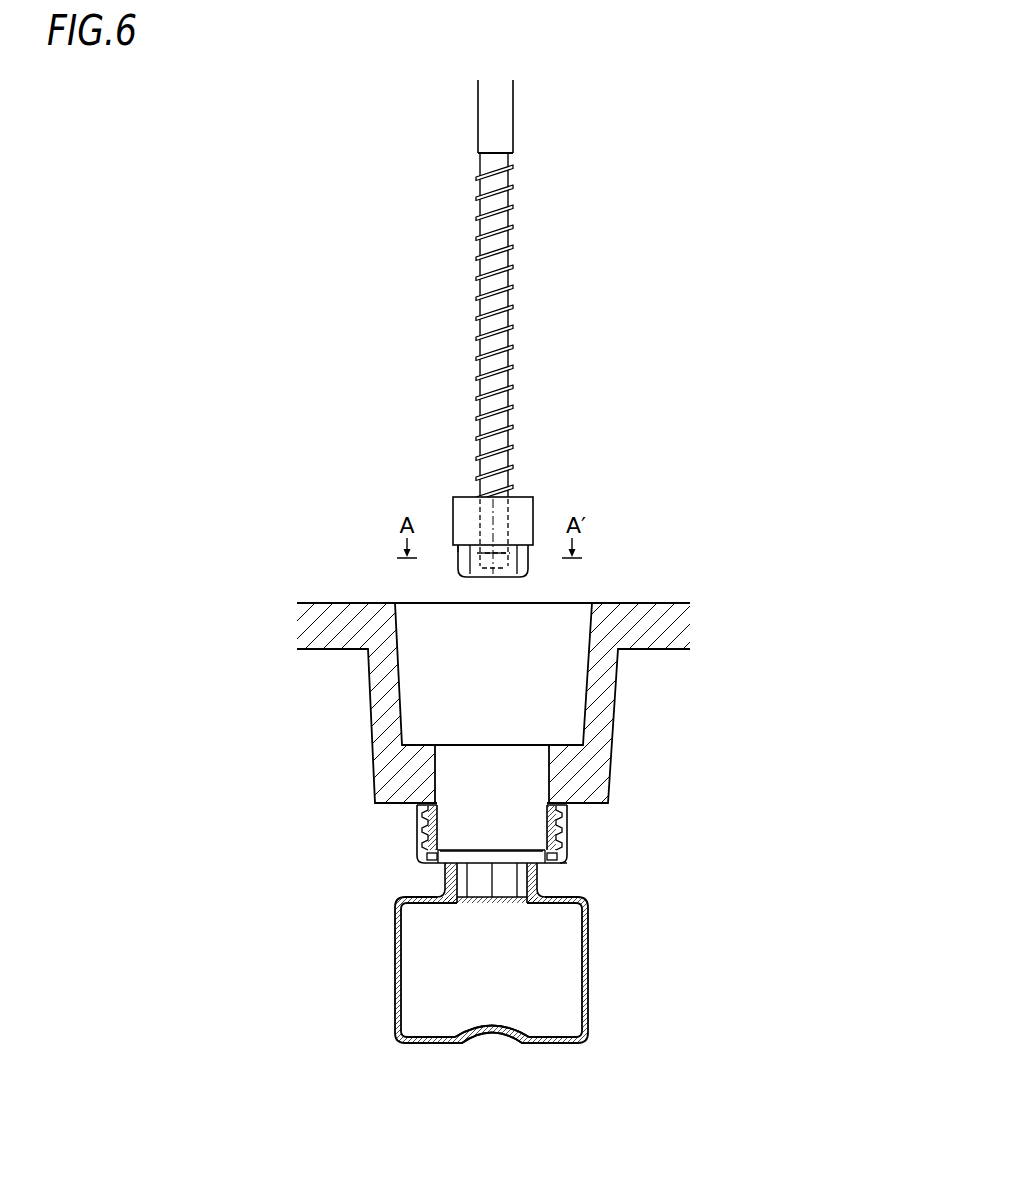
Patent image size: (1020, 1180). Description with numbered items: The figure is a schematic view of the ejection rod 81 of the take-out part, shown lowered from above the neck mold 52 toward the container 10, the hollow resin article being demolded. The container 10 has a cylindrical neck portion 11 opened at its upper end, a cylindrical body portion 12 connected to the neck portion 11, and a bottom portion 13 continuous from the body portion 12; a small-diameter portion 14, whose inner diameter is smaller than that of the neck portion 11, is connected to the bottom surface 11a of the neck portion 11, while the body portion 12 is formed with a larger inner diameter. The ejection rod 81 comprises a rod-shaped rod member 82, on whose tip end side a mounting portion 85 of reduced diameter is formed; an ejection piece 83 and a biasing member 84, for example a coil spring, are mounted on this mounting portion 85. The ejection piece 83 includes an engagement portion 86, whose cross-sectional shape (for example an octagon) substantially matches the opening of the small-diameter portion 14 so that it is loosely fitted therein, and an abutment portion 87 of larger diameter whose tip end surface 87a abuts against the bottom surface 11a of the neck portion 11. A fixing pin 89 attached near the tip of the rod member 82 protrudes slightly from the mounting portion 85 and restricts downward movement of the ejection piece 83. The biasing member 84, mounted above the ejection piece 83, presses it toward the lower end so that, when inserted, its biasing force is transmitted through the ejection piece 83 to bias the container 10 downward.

The container 10 is at (636, 861).
The neck portion 11 is at (439, 825).
The bottom surface of the neck portion 11a is at (453, 862).
The body portion 12 is at (395, 975).
The bottom portion 13 is at (432, 1045).
The small-diameter portion 14 is at (447, 882).
The neck mold 52 is at (597, 767).
The ejection rod 81 is at (596, 150).
The rod member 82 is at (489, 126).
The ejection piece 83 is at (603, 430).
The biasing member 84 is at (507, 265).
The mounting portion 85 is at (492, 222).
The engagement portion 86 is at (528, 557).
The abutment portion 87 is at (518, 507).
The tip end surface 87a is at (460, 548).
The fixing pin 89 is at (478, 553).